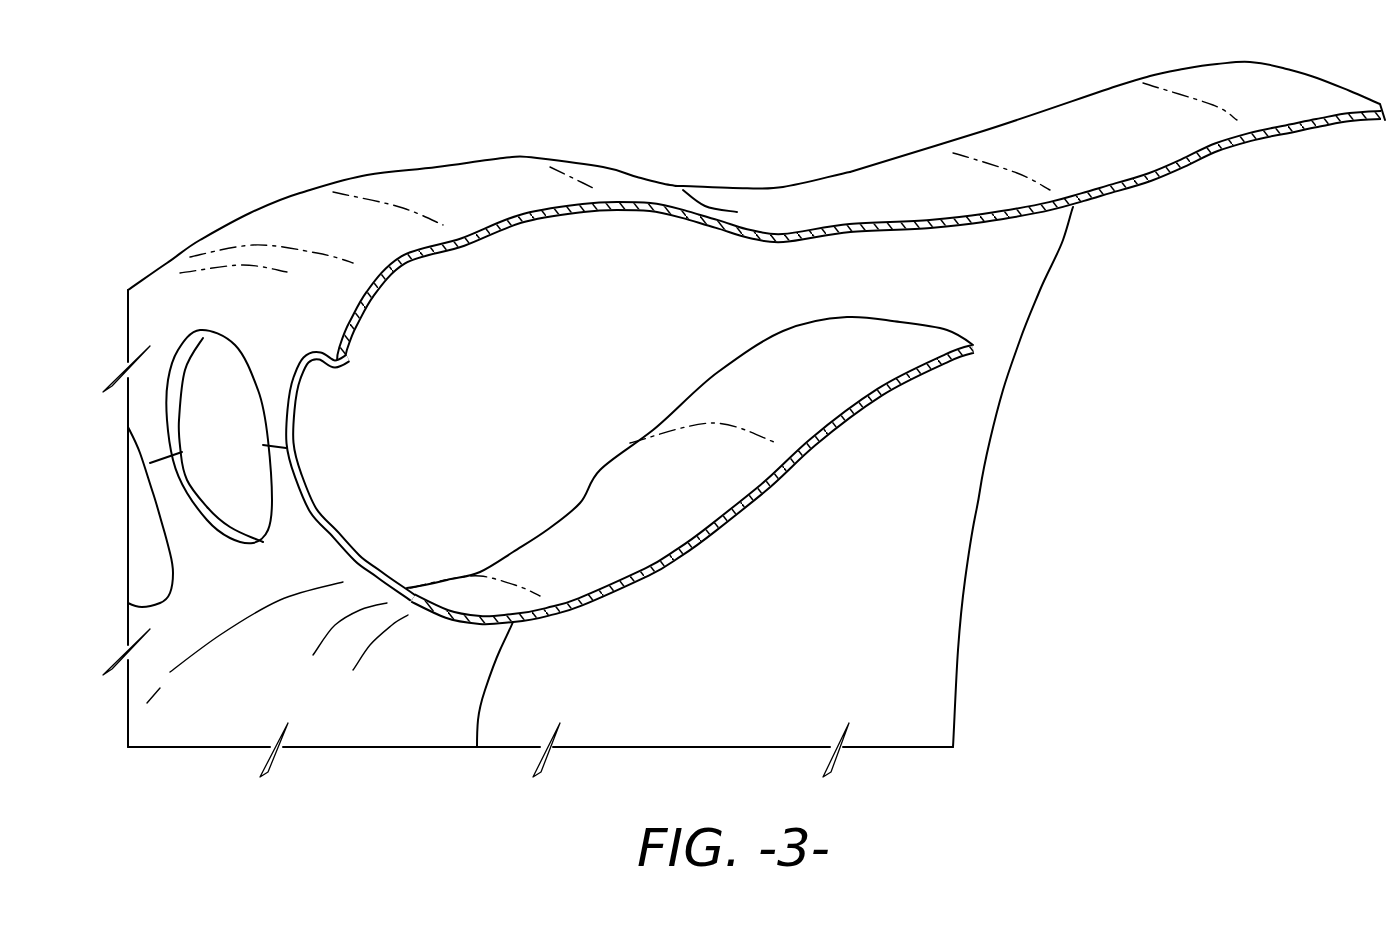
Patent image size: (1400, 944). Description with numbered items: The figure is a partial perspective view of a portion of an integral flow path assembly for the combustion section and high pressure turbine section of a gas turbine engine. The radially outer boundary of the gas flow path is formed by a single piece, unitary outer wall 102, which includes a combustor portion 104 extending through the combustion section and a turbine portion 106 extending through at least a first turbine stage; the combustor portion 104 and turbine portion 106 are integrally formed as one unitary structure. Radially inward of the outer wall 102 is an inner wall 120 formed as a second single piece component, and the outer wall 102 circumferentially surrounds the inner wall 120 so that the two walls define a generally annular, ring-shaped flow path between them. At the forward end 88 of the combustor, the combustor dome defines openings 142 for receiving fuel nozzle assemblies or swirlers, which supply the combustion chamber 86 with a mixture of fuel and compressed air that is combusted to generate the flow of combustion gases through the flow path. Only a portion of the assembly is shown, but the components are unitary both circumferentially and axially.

The combustion chamber 86 is at (515, 505).
The forward end 88 is at (220, 603).
The outer wall 102 is at (618, 183).
The combustor portion 104 is at (410, 155).
The turbine portion 106 is at (1033, 95).
The inner wall 120 is at (860, 340).
The opening 142 is at (217, 463).